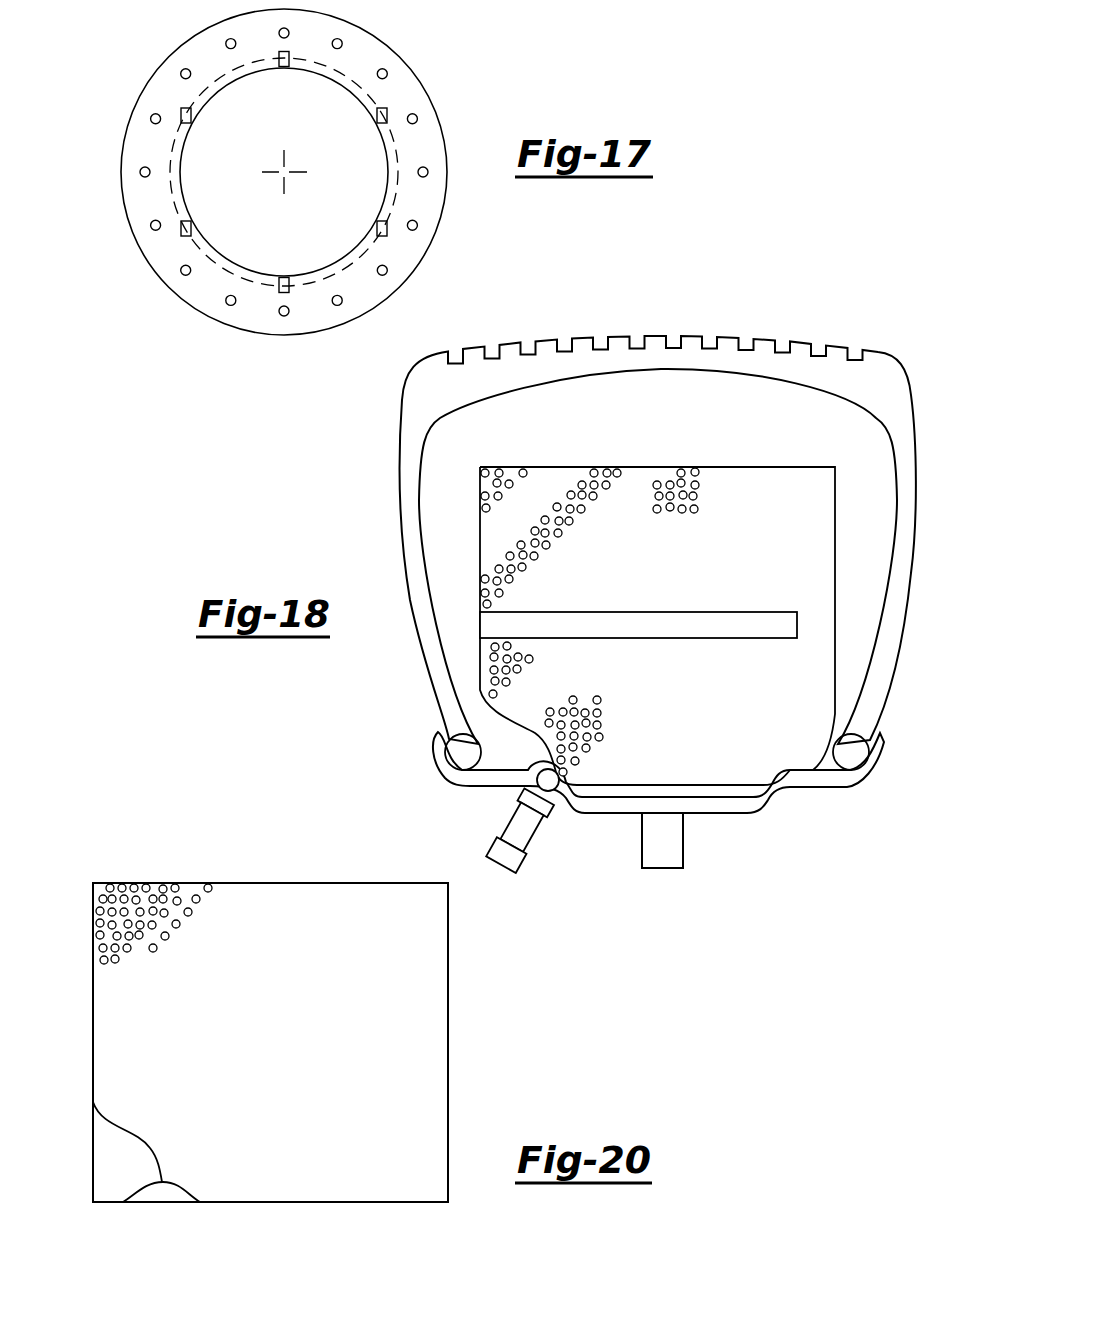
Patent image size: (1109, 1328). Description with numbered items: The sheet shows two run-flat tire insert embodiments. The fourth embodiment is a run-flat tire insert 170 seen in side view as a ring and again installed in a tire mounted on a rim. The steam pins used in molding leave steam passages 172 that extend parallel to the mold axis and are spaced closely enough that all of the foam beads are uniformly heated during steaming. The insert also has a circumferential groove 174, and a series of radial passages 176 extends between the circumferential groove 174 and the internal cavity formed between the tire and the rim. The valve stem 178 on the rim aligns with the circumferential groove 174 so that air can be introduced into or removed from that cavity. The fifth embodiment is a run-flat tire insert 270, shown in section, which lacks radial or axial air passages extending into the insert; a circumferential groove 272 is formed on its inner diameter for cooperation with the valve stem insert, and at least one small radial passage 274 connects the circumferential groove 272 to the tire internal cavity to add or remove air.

In FIG. 17, the run-flat tire insert 170 is at (176, 48).
In FIG. 18, the run-flat tire insert 170 is at (835, 563).
In FIG. 17, the steam passages 172 is at (229, 305).
In FIG. 18, the steam passages 172 is at (500, 625).
In FIG. 17, the circumferential groove 174 is at (190, 173).
In FIG. 18, the circumferential groove 174 is at (562, 768).
In FIG. 17, the radial passages 176 is at (389, 113).
In FIG. 18, the radial passages 176 is at (512, 747).
In FIG. 18, the valve stem 178 is at (533, 833).
In FIG. 20, the run-flat tire insert 270 is at (477, 1003).
In FIG. 20, the circumferential groove 272 is at (163, 1193).
In FIG. 20, the radial passage 274 is at (92, 1155).